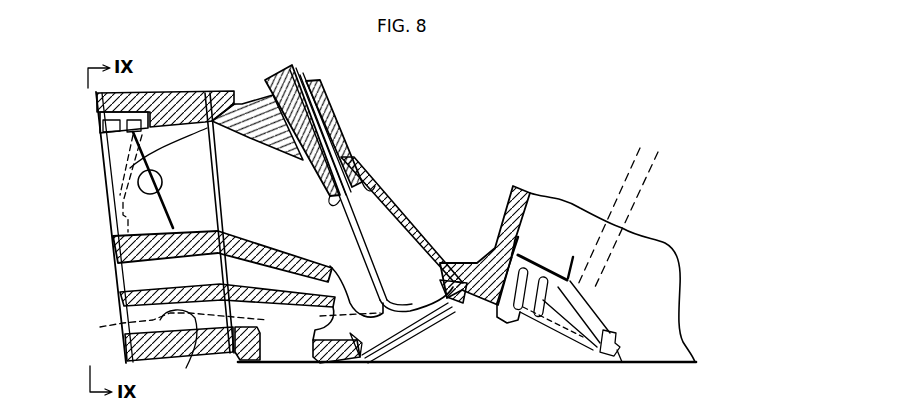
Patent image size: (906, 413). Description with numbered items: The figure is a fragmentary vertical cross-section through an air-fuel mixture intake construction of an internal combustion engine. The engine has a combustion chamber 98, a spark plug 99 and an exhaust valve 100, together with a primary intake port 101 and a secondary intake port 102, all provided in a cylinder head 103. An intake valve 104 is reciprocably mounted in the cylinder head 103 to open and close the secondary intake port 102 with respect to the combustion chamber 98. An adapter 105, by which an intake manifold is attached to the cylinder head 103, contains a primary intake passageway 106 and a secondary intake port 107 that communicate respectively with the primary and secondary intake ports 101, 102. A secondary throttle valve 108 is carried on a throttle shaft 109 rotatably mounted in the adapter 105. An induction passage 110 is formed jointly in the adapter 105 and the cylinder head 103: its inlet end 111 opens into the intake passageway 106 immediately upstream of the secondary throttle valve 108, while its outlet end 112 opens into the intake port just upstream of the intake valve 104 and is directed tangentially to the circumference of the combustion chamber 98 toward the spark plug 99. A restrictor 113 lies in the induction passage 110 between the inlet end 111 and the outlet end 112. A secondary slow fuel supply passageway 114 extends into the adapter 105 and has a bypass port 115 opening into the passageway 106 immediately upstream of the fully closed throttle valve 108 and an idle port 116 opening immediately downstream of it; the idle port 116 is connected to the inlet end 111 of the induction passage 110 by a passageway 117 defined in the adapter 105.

The combustion chamber 98 is at (458, 352).
The spark plug 99 is at (537, 253).
The exhaust valve 100 is at (587, 285).
The primary intake port 101 is at (293, 283).
The secondary intake port 102 is at (287, 183).
The cylinder head 103 is at (423, 231).
The intake valve 104 is at (397, 287).
The adapter 105 is at (160, 103).
The primary intake passageway 106 is at (120, 233).
The secondary intake port 107 is at (143, 282).
The secondary throttle valve 108 is at (205, 122).
The throttle shaft 109 is at (138, 184).
The induction passage 110 is at (137, 318).
The inlet end 111 is at (110, 203).
The outlet end 112 is at (372, 360).
The restrictor 113 is at (178, 349).
The secondary slow fuel supply passageway 114 is at (142, 112).
The bypass port 115 is at (102, 137).
The idle port 116 is at (180, 120).
The passageway 117 is at (97, 163).